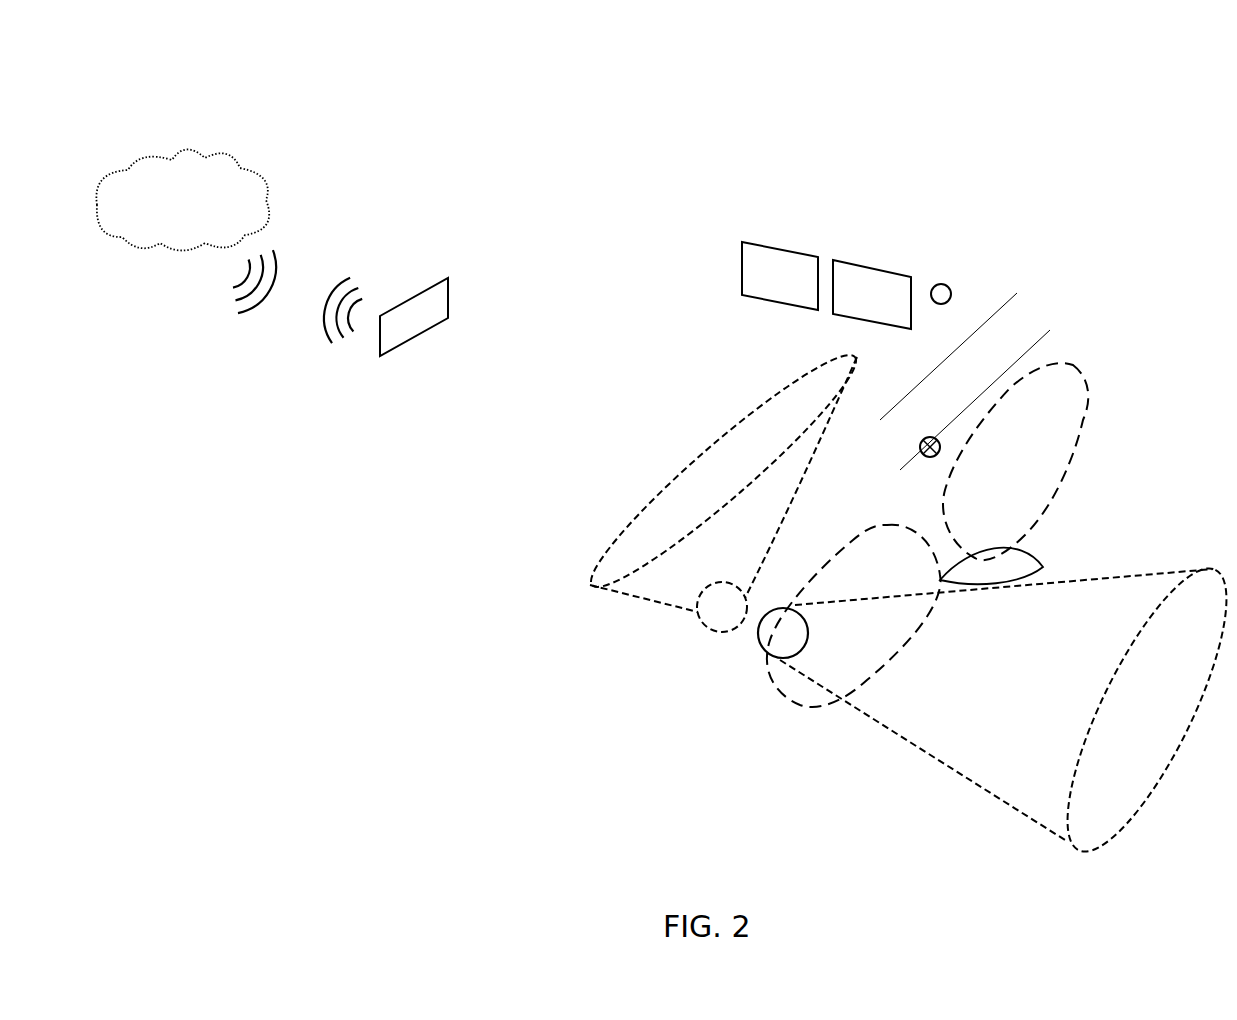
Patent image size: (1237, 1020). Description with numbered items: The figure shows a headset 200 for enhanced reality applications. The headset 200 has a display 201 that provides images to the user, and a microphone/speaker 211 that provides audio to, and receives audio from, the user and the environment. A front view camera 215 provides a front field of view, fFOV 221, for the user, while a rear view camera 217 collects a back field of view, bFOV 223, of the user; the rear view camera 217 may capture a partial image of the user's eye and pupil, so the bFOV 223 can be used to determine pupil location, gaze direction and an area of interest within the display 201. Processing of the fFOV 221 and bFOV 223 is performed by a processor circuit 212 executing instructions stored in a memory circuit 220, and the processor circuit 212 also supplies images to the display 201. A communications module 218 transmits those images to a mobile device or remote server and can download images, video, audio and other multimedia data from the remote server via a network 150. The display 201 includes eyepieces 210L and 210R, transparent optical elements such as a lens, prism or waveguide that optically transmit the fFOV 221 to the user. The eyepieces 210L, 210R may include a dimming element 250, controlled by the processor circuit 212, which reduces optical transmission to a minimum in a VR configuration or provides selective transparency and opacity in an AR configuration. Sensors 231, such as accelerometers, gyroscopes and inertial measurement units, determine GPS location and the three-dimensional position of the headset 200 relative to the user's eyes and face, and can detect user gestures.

The network 150 is at (212, 213).
The headset 200 is at (298, 50).
The display 201 is at (1061, 389).
The eyepiece 210L is at (1046, 479).
The eyepiece 210R is at (916, 593).
The microphone/speaker 211 is at (946, 447).
The processor circuit 212 is at (769, 280).
The front view camera 215 is at (778, 662).
The rear view camera 217 is at (691, 612).
The communications module 218 is at (415, 319).
The memory circuit 220 is at (865, 301).
The fFOV 221 is at (1193, 703).
The bFOV 223 is at (740, 468).
The sensors 231 is at (956, 284).
The dimming element 250 is at (1025, 560).